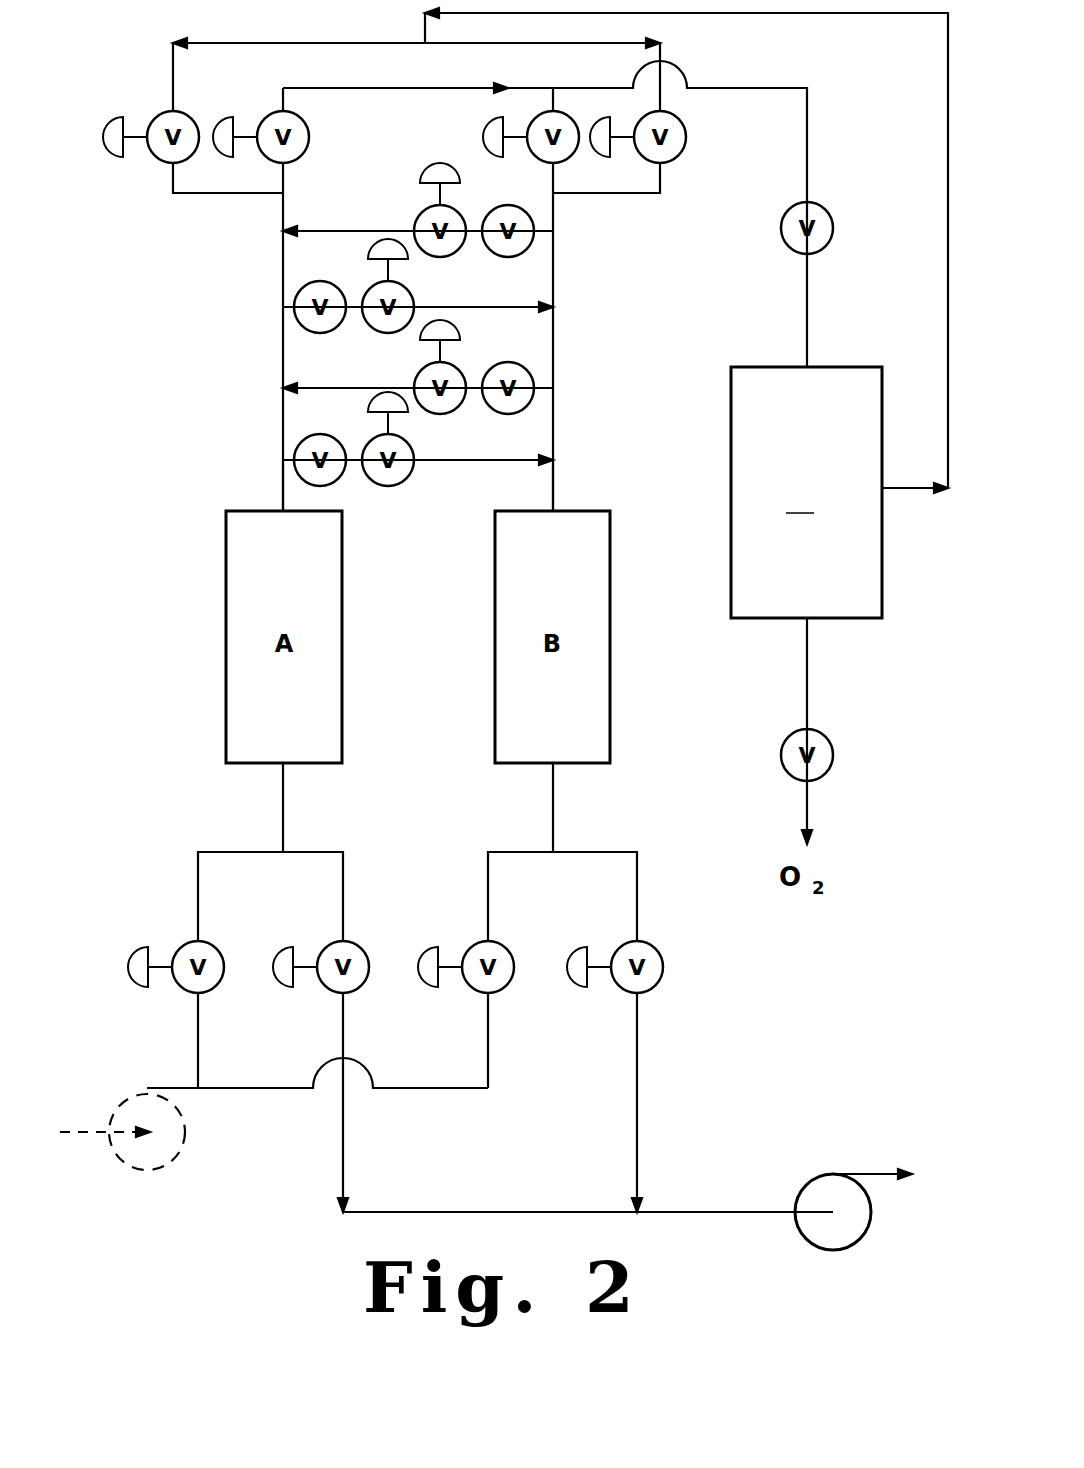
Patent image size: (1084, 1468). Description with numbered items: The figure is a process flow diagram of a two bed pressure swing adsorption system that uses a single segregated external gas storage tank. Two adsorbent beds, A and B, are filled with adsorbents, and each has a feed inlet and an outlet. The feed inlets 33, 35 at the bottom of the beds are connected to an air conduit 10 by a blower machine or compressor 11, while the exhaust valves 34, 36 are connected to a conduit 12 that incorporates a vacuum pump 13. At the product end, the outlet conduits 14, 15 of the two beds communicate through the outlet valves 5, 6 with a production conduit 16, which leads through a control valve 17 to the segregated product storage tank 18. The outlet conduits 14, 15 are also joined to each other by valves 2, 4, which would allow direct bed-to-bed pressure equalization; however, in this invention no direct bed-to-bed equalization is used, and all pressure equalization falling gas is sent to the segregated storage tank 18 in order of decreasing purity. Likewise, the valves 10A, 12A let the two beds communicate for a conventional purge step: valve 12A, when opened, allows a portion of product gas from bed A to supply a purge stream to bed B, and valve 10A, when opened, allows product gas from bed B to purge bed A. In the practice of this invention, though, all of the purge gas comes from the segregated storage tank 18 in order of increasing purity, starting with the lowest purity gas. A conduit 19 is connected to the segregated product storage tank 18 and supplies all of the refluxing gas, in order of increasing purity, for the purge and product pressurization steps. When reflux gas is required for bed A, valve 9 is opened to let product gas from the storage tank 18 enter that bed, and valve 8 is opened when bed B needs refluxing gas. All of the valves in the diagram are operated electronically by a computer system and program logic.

The valve 2 is at (448, 257).
The valve 4 is at (342, 323).
The outlet valve 5 is at (310, 147).
The outlet valve 6 is at (575, 150).
The valve 8 is at (680, 150).
The valve 9 is at (180, 113).
The air conduit 10 is at (80, 1127).
The valve 10A is at (447, 412).
The blower machine or compressor 11 is at (167, 1145).
The conduit 12 is at (700, 1210).
The valve 12A is at (340, 484).
The vacuum pump 13 is at (833, 1238).
The outlet conduit 14 is at (283, 481).
The outlet conduit 15 is at (555, 488).
The production conduit 16 is at (410, 90).
The control valve 17 is at (780, 236).
The segregated product storage tank 18 is at (806, 492).
The conduit 19 is at (947, 245).
The feed inlet 33 is at (214, 950).
The exhaust valve 34 is at (360, 950).
The feed inlet 35 is at (503, 945).
The exhaust valve 36 is at (655, 945).